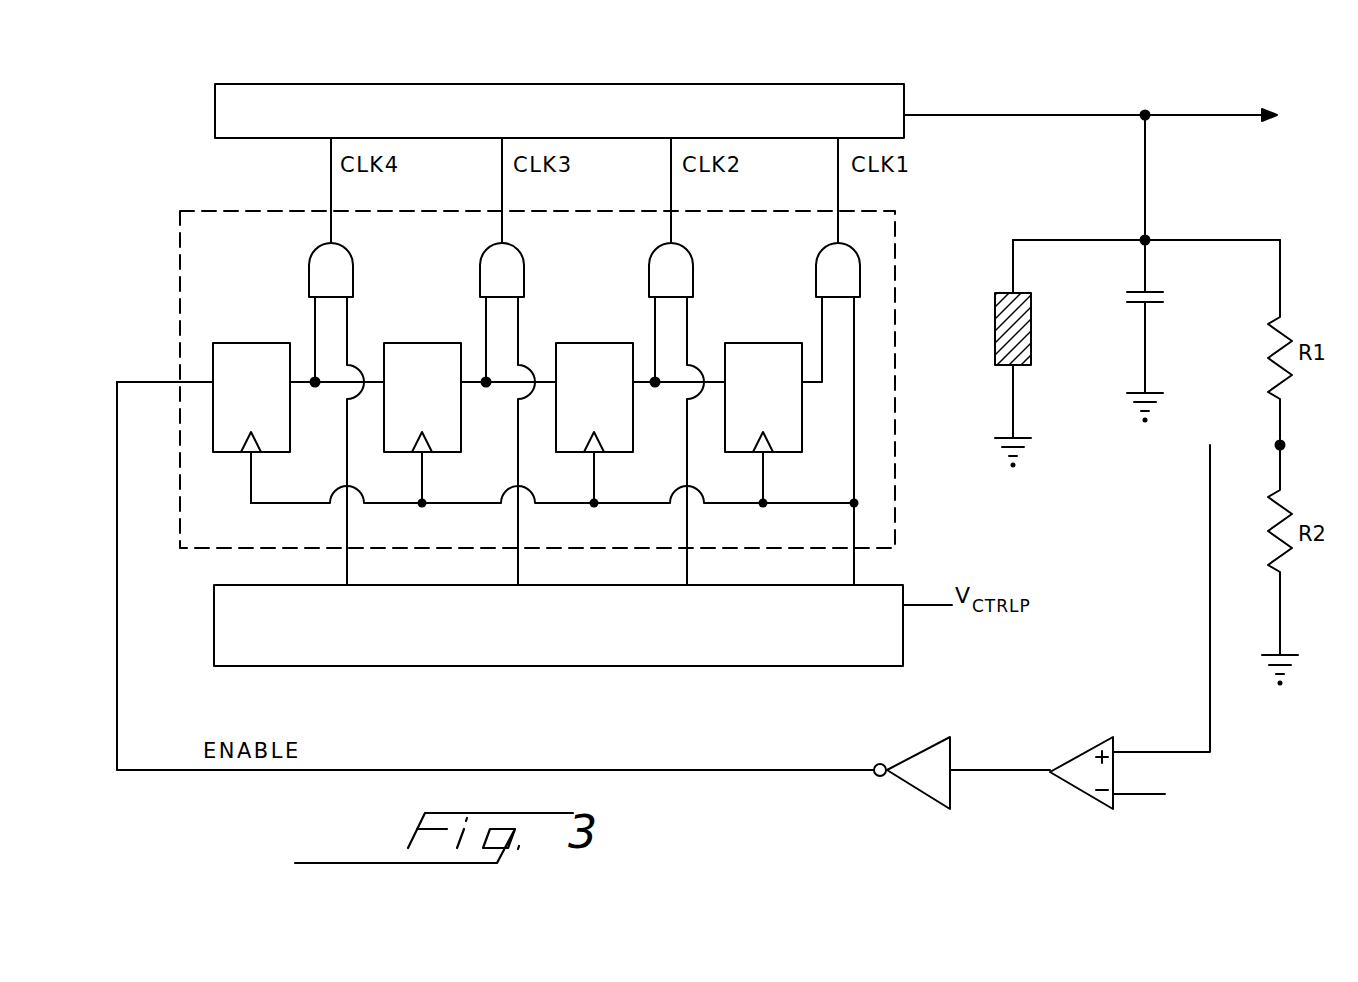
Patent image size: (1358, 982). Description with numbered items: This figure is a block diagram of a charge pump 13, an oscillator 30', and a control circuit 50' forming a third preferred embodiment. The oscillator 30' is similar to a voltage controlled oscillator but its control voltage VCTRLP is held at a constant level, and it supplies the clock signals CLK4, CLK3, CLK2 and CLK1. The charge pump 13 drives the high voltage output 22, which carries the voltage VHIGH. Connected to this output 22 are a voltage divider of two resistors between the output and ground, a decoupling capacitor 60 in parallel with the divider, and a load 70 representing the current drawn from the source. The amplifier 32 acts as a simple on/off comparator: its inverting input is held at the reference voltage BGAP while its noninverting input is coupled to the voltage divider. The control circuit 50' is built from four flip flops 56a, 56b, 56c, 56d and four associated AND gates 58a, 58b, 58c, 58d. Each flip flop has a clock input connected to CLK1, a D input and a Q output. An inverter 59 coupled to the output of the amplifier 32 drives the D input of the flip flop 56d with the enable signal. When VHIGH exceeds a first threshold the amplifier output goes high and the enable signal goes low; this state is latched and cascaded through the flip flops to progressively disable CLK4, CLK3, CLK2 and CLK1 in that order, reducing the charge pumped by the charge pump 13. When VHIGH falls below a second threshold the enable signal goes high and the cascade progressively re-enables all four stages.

The charge pump 13 is at (760, 84).
The high voltage output 22 is at (1200, 115).
The oscillator 30' is at (558, 650).
The amplifier 32 is at (1085, 794).
The control circuit 50' is at (493, 379).
The flip flop 56a is at (767, 343).
The flip flop 56b is at (598, 343).
The flip flop 56c is at (425, 343).
The flip flop 56d is at (253, 343).
The AND gate 58a is at (816, 259).
The AND gate 58b is at (649, 259).
The AND gate 58c is at (480, 259).
The AND gate 58d is at (309, 259).
The inverter 59 is at (913, 791).
The decoupling capacitor 60 is at (1158, 304).
The load 70 is at (995, 352).